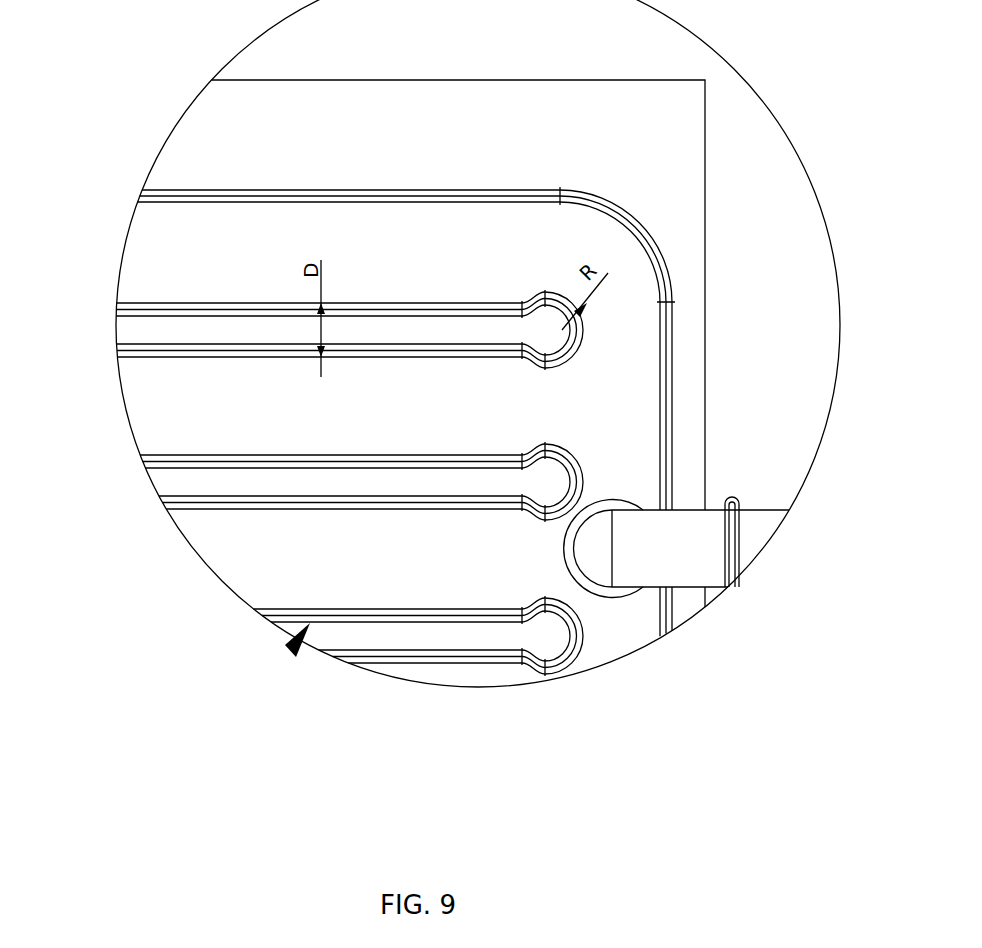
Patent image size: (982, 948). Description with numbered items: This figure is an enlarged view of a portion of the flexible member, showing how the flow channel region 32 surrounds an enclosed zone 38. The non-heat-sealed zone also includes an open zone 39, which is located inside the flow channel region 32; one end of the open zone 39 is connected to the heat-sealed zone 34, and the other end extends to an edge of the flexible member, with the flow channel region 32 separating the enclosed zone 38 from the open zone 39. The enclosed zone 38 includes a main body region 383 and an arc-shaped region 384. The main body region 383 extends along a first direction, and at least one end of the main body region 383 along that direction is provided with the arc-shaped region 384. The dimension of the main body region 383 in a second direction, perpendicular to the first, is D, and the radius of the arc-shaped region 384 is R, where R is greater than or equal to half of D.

The open zone 39 is at (196, 133).
The flow channel region 32 is at (136, 243).
The enclosed zone 38 is at (316, 570).
The main body region 383 is at (437, 640).
The arc-shaped region 384 is at (562, 690).
The heat-sealed zone 34 is at (291, 651).